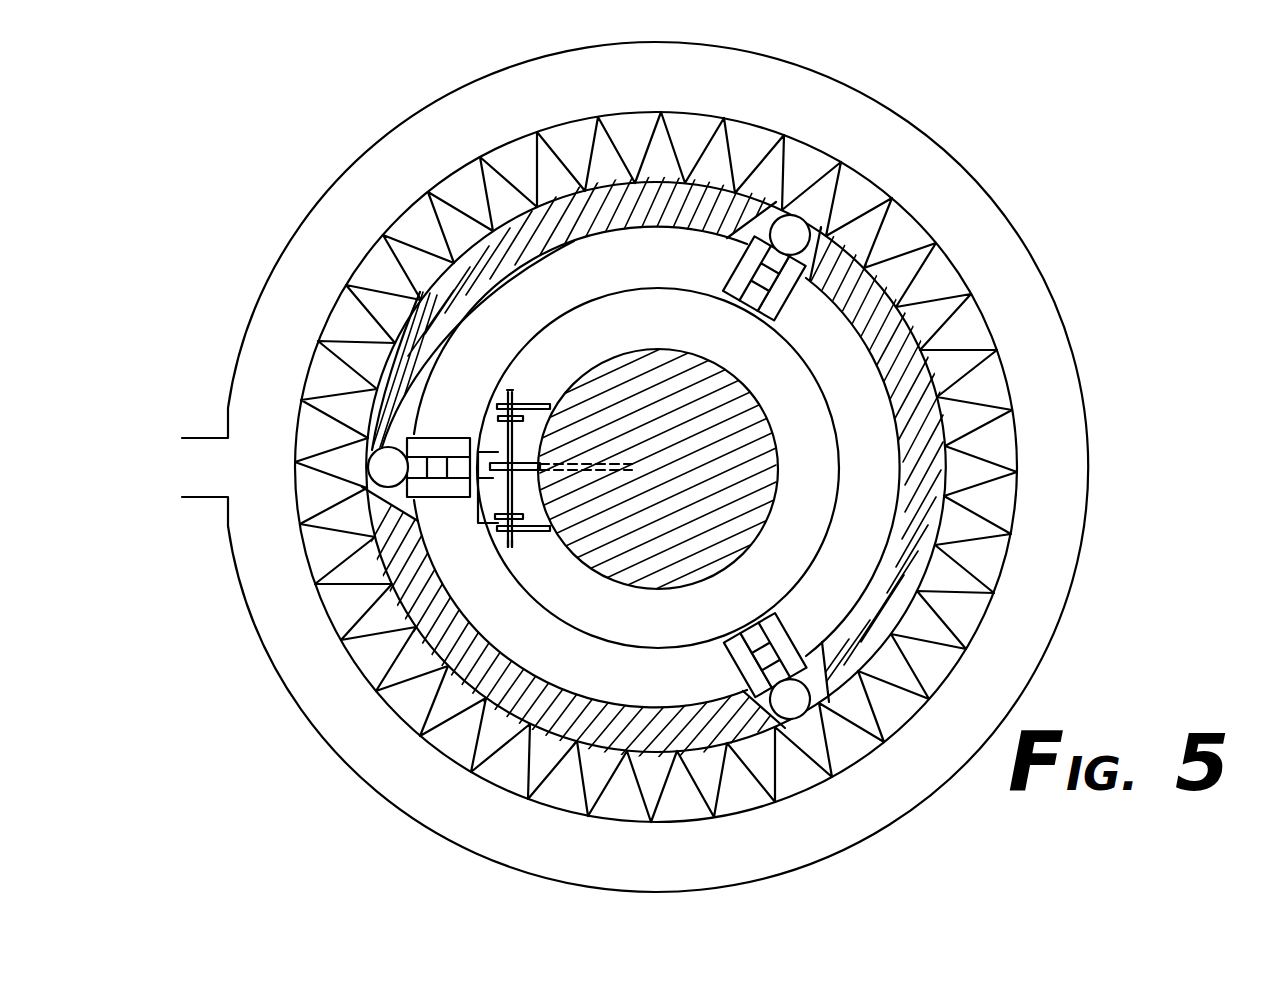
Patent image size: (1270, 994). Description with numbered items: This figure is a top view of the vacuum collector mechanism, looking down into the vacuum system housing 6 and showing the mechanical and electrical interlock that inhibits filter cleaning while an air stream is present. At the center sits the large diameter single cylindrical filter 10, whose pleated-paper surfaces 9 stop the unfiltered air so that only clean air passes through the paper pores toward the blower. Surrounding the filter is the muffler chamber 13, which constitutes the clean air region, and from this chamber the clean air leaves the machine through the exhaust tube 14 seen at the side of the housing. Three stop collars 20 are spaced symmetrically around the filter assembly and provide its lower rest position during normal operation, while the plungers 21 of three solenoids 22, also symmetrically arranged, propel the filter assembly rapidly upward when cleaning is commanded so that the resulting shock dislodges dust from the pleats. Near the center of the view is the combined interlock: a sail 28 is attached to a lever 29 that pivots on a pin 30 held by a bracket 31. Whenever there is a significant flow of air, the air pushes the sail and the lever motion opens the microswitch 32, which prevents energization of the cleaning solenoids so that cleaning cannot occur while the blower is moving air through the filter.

The vacuum system housing 6 is at (1017, 235).
The pleated-paper surfaces 9 is at (987, 565).
The cylindrical filter 10 is at (1003, 386).
The muffler chamber 13 is at (403, 162).
The exhaust tube 14 is at (205, 435).
The stop collars 20 is at (370, 440).
The plungers 21 is at (440, 497).
The solenoids 22 is at (432, 438).
The sail 28 is at (780, 446).
The lever 29 is at (522, 476).
The pin 30 is at (510, 547).
The bracket 31 is at (516, 385).
The microswitch 32 is at (493, 482).